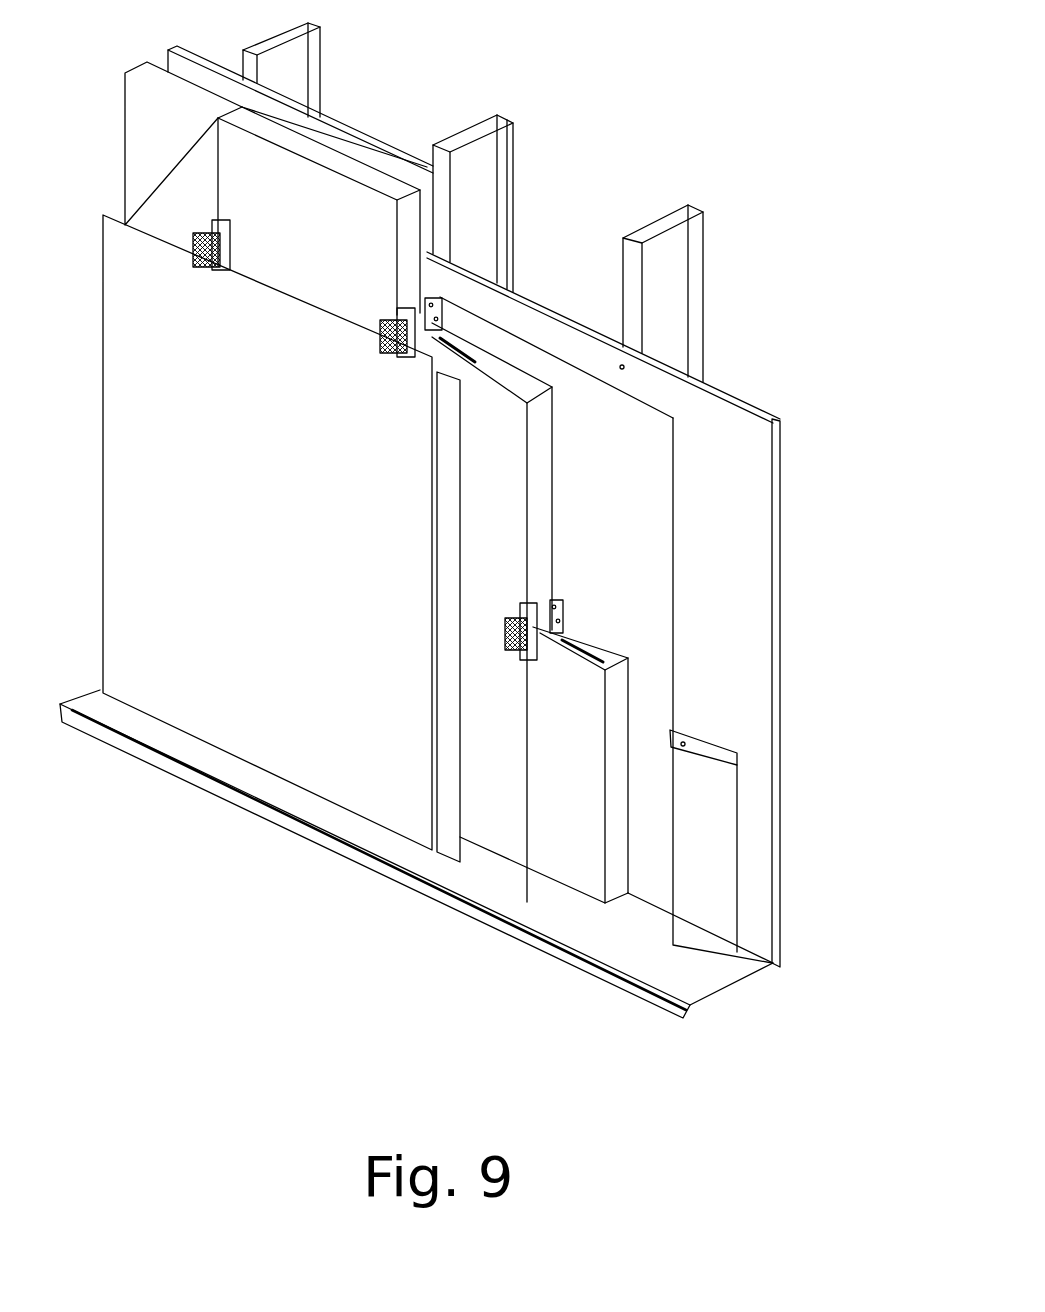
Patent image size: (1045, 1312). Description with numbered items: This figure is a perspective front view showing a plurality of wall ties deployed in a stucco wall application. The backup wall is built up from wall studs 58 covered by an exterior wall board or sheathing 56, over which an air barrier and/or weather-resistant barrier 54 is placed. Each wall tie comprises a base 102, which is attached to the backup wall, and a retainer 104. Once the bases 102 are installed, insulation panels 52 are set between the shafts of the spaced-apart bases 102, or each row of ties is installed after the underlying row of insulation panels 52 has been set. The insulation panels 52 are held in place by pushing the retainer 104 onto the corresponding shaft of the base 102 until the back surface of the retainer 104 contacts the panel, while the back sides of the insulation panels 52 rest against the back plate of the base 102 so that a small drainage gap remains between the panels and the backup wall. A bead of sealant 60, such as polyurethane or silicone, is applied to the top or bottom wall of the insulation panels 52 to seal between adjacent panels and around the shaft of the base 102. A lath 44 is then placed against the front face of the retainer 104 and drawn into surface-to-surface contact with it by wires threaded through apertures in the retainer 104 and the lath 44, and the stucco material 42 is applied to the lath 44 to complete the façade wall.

The stucco material 42 is at (353, 768).
The lath 44 is at (443, 830).
The insulation panel 52 is at (315, 202).
The air barrier and/or weather-resistant barrier 54 is at (650, 493).
The exterior wall board or sheathing 56 is at (718, 610).
The wall studs 58 is at (486, 176).
The bead of sealant 60 is at (442, 347).
The base 102 is at (437, 310).
The retainer 104 is at (230, 240).